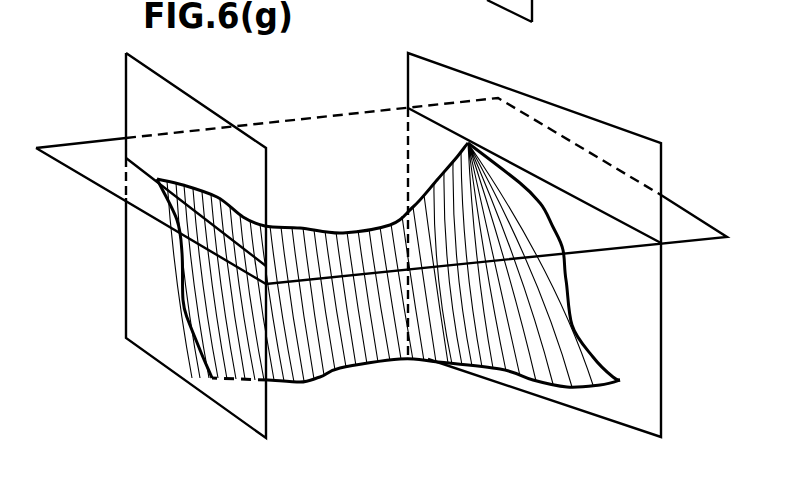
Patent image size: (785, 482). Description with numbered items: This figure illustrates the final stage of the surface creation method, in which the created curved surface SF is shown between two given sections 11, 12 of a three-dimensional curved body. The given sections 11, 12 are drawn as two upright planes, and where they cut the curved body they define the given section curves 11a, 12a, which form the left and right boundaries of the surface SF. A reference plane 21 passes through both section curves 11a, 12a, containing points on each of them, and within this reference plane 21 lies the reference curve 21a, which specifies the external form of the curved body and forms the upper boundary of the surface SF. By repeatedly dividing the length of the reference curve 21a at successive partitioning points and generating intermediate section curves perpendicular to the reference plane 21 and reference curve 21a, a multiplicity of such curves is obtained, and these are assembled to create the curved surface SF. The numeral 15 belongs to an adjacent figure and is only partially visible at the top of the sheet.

The given section 11 is at (147, 77).
The given section 12 is at (592, 124).
The reference plane 21 is at (83, 147).
The reference curve 21a is at (318, 225).
The section curve 11a is at (187, 326).
The section curve 12a is at (577, 330).
The curved surface SF is at (395, 357).
The element of adjacent figure 15 is at (455, 11).